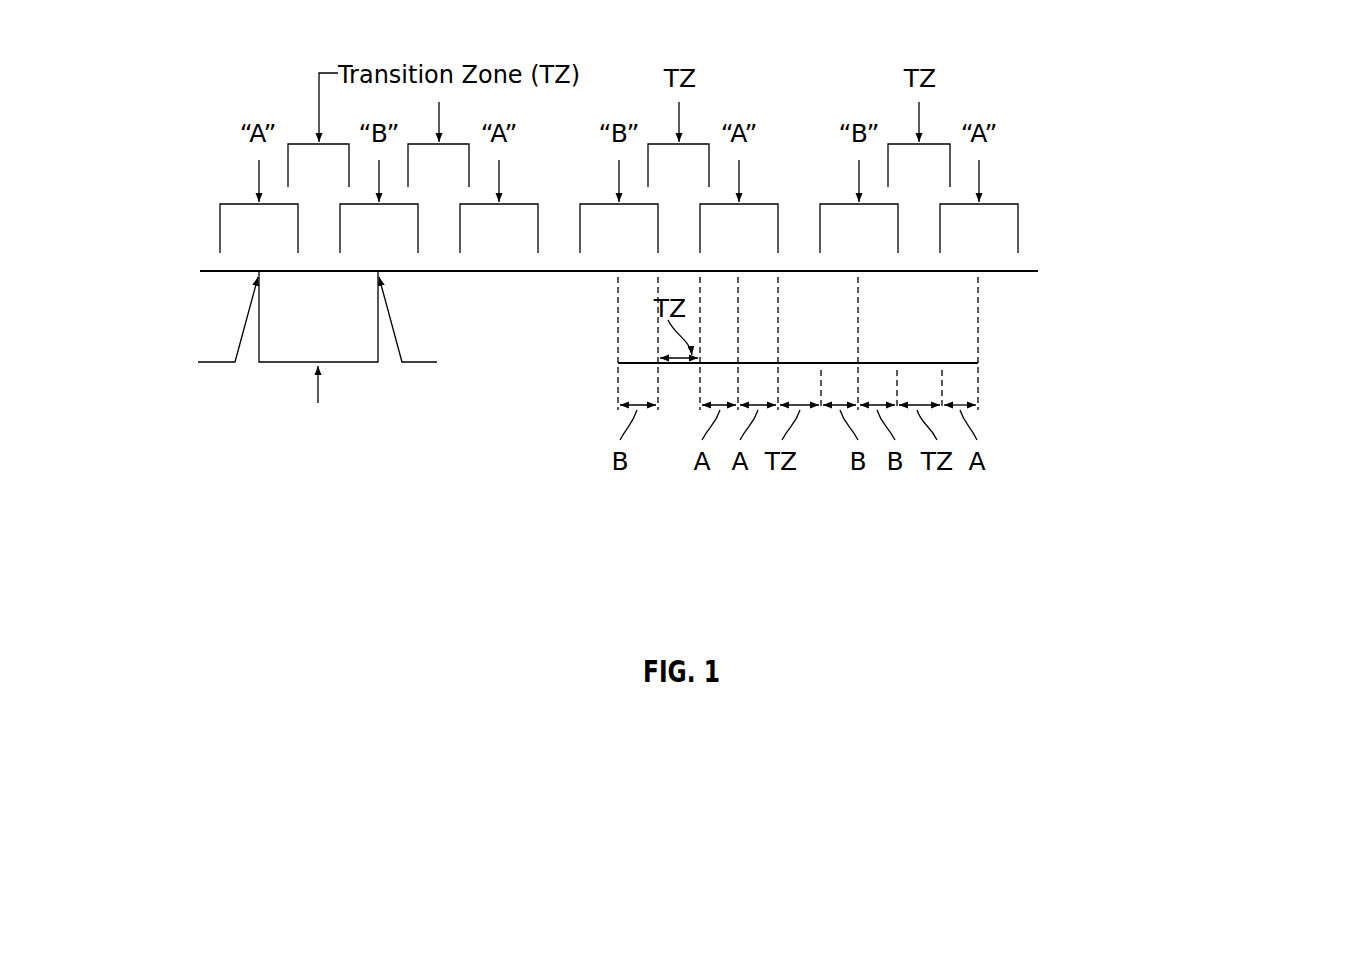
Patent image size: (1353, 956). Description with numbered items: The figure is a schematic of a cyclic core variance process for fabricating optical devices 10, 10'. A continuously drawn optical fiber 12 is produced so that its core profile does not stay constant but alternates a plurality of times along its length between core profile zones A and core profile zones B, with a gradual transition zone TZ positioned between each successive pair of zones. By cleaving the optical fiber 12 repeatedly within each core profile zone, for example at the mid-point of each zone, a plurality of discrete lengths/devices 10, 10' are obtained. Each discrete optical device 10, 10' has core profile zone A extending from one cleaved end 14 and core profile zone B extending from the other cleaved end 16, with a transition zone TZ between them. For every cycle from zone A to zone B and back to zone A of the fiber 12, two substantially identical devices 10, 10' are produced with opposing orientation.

The discrete length/device 10 is at (615, 427).
The discrete length/device 10' is at (615, 427).
The optical fiber 12 is at (1018, 277).
The cleaved end 14 is at (552, 373).
The cleaved end 16 is at (639, 373).